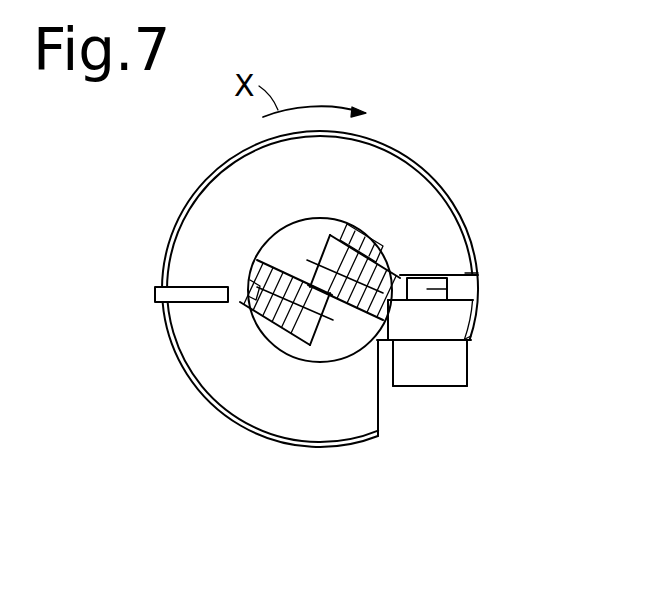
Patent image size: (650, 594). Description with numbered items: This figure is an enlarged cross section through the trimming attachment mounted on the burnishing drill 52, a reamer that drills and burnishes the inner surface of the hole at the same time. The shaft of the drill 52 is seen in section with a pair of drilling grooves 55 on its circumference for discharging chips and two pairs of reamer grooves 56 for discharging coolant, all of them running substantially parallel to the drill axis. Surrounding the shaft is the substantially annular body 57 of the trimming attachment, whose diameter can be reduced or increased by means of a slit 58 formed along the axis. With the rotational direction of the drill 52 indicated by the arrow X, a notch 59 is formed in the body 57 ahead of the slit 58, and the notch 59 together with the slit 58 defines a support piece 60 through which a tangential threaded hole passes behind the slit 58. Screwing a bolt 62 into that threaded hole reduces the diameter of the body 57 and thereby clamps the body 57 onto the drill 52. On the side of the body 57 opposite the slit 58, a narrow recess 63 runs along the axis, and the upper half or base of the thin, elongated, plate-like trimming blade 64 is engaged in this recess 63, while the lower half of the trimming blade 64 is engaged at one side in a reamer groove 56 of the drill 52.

The burnishing drill 52 is at (294, 350).
The drilling grooves 55 is at (333, 236).
The reamer grooves 56 is at (392, 274).
The body 57 is at (280, 446).
The slit 58 is at (457, 298).
The notch 59 is at (382, 413).
The support piece 60 is at (447, 325).
The bolt 62 is at (431, 375).
The recess 63 is at (172, 328).
The trimming blade 64 is at (160, 297).